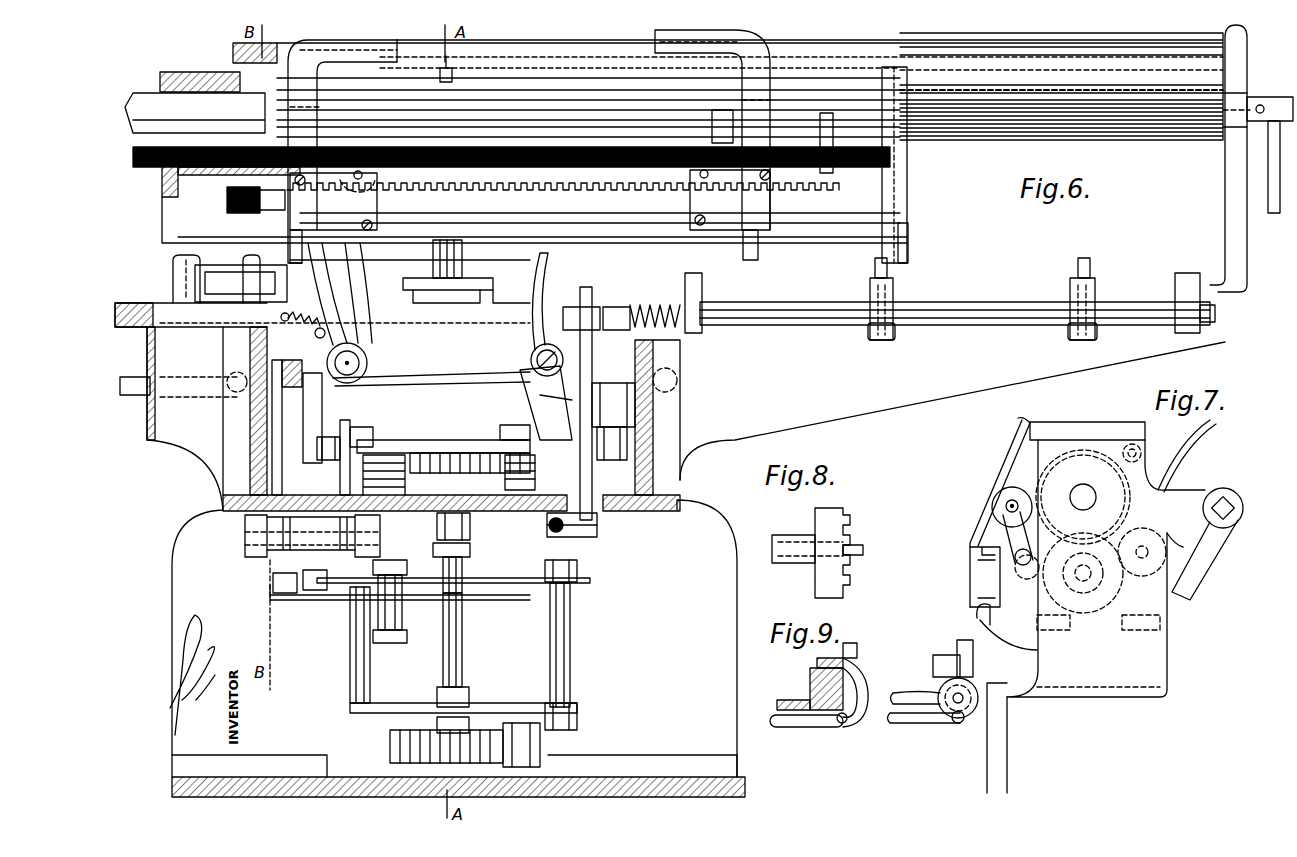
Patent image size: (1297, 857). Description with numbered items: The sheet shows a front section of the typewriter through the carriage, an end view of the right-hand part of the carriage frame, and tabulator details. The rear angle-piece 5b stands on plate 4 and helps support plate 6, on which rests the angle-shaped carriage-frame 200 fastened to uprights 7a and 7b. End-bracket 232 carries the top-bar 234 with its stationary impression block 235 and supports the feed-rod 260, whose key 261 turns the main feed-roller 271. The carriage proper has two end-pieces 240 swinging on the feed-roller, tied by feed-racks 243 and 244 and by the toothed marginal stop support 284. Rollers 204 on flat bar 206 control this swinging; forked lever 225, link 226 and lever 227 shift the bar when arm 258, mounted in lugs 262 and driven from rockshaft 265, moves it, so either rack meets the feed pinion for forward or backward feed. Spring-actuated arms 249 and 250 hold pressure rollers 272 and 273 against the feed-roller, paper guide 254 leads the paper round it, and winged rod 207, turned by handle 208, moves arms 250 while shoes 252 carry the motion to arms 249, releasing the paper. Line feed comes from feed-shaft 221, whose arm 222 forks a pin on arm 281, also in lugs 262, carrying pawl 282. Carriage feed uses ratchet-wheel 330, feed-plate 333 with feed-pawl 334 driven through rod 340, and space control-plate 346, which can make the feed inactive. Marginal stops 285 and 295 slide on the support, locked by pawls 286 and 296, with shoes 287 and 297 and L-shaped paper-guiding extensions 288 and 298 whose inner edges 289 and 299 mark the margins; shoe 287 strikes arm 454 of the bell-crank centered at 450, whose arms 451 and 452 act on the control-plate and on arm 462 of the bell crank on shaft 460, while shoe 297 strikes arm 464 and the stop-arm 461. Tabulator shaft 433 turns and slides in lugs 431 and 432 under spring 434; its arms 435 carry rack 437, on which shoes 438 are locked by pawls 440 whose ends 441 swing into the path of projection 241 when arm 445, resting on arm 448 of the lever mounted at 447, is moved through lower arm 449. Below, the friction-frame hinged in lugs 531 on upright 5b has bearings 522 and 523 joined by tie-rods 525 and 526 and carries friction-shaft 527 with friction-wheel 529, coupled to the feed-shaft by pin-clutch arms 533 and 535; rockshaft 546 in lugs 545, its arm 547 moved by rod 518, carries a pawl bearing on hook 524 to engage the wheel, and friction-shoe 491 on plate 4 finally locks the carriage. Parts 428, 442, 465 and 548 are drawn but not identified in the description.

In FIG. 6, the base 4 is at (745, 783).
In FIG. 6, the housing 5b is at (710, 525).
In FIG. 6, the frame floor 6 is at (625, 512).
In FIG. 6, the left wall 7a is at (262, 425).
In FIG. 6, the right wall 7b is at (655, 423).
In FIG. 6, the casting 200 is at (905, 402).
In FIG. 6, the shaft 204 is at (462, 255).
In FIG. 6, the plate 206 is at (475, 285).
In FIG. 7, the handle hub 207 is at (1212, 483).
In FIG. 6, the handle 208 is at (1268, 200).
In FIG. 7, the handle 208 is at (1210, 550).
In FIG. 6, the pin 221 is at (147, 380).
In FIG. 6, the link 222 is at (322, 413).
In FIG. 6, the plate 225 is at (405, 263).
In FIG. 6, the bracket 226 is at (285, 282).
In FIG. 6, the post 227 is at (173, 270).
In FIG. 6, the end bracket 232 is at (1250, 250).
In FIG. 7, the end bracket 232 is at (1167, 650).
In FIG. 6, the platen roller 234 is at (1048, 42).
In FIG. 7, the platen roller 234 is at (1103, 423).
In FIG. 6, the screw 235 is at (444, 65).
In FIG. 6, the frame 240 is at (162, 172).
In FIG. 7, the frame 240 is at (1020, 650).
In FIG. 6, the lug 241 is at (908, 247).
In FIG. 7, the lug 241 is at (975, 628).
In FIG. 6, the slot 243 is at (655, 240).
In FIG. 7, the slot 243 is at (1050, 630).
In FIG. 7, the slot 244 is at (1140, 630).
In FIG. 6, the link 249 is at (833, 115).
In FIG. 7, the link 249 is at (1010, 537).
In FIG. 6, the gear 250 is at (232, 188).
In FIG. 7, the gear 250 is at (1100, 585).
In FIG. 7, the pinion 252 is at (1050, 580).
In FIG. 7, the spring 254 is at (1205, 448).
In FIG. 6, the post 258 is at (275, 445).
In FIG. 6, the shaft 260 is at (135, 95).
In FIG. 7, the shaft 260 is at (1108, 492).
In FIG. 6, the sleeve 261 is at (150, 88).
In FIG. 6, the bearing 262 is at (245, 532).
In FIG. 6, the screw 265 is at (290, 390).
In FIG. 6, the collar 271 is at (220, 70).
In FIG. 7, the collar 271 is at (1117, 475).
In FIG. 6, the roller 272 is at (712, 115).
In FIG. 7, the roller 272 is at (1012, 496).
In FIG. 7, the gear 273 is at (1155, 522).
In FIG. 6, the bar 281 is at (340, 487).
In FIG. 6, the nut 282 is at (330, 460).
In FIG. 6, the rack 284 is at (562, 212).
In FIG. 7, the rack 284 is at (970, 583).
In FIG. 6, the rack tooth 285 is at (692, 190).
In FIG. 6, the block 286 is at (730, 200).
In FIG. 6, the stud 287 is at (758, 250).
In FIG. 6, the arm 288 is at (760, 55).
In FIG. 7, the arm 288 is at (990, 492).
In FIG. 6, the arm end 289 is at (656, 36).
In FIG. 6, the block 295 is at (377, 205).
In FIG. 6, the pawl 296 is at (354, 190).
In FIG. 6, the finger 297 is at (296, 235).
In FIG. 6, the arm 298 is at (300, 50).
In FIG. 6, the arm end 299 is at (400, 38).
In FIG. 6, the gear 330 is at (478, 463).
In FIG. 6, the collar 333 is at (512, 432).
In FIG. 6, the spring 334 is at (519, 472).
In FIG. 6, the nut 340 is at (373, 430).
In FIG. 6, the collar 346 is at (597, 440).
In FIG. 6, the pin 428 is at (548, 533).
In FIG. 6, the nut 431 is at (613, 307).
In FIG. 6, the shaft end 432 is at (1191, 329).
In FIG. 6, the shaft 433 is at (835, 332).
In FIG. 6, the spring 434 is at (655, 305).
In FIG. 6, the collar 435 is at (702, 297).
In FIG. 7, the collar 435 is at (940, 690).
In FIG. 6, the clutch member 437 is at (948, 290).
In FIG. 8, the clutch member 437 is at (848, 520).
In FIG. 9, the clutch member 437 is at (820, 658).
In FIG. 6, the clutch block 438 is at (870, 297).
In FIG. 8, the clutch block 438 is at (795, 535).
In FIG. 9, the clutch block 438 is at (810, 680).
In FIG. 7, the clutch block 438 is at (933, 665).
In FIG. 6, the pawl 440 is at (895, 345).
In FIG. 9, the pawl 440 is at (862, 722).
In FIG. 7, the pawl 440 is at (958, 723).
In FIG. 6, the pin 441 is at (875, 268).
In FIG. 9, the pin 441 is at (857, 645).
In FIG. 7, the pin 441 is at (957, 645).
In FIG. 9, the arm 442 is at (806, 721).
In FIG. 6, the rod 445 is at (592, 290).
In FIG. 6, the cylinder 447 is at (612, 390).
In FIG. 6, the rod 448 is at (592, 350).
In FIG. 6, the pin 449 is at (597, 525).
In FIG. 6, the screw 450 is at (555, 354).
In FIG. 6, the lever 451 is at (536, 412).
In FIG. 6, the lever arm 452 is at (512, 356).
In FIG. 6, the arm 454 is at (547, 280).
In FIG. 6, the roller 460 is at (360, 363).
In FIG. 6, the link 461 is at (338, 338).
In FIG. 6, the bar 462 is at (418, 358).
In FIG. 6, the lever 464 is at (365, 312).
In FIG. 6, the spring 465 is at (300, 325).
In FIG. 6, the gear 491 is at (540, 748).
In FIG. 6, the bracket 518 is at (270, 588).
In FIG. 6, the plate 522 is at (512, 580).
In FIG. 6, the plate 523 is at (512, 705).
In FIG. 6, the nut 524 is at (335, 572).
In FIG. 6, the bar 525 is at (350, 672).
In FIG. 6, the bar 526 is at (570, 640).
In FIG. 6, the shaft 527 is at (462, 630).
In FIG. 6, the gear 529 is at (390, 745).
In FIG. 6, the collar 531 is at (577, 565).
In FIG. 6, the collar 533 is at (470, 527).
In FIG. 6, the collar 535 is at (470, 550).
In FIG. 6, the collar 545 is at (415, 645).
In FIG. 6, the sleeve 546 is at (402, 603).
In FIG. 6, the bar 547 is at (325, 605).
In FIG. 6, the nut 548 is at (295, 568).